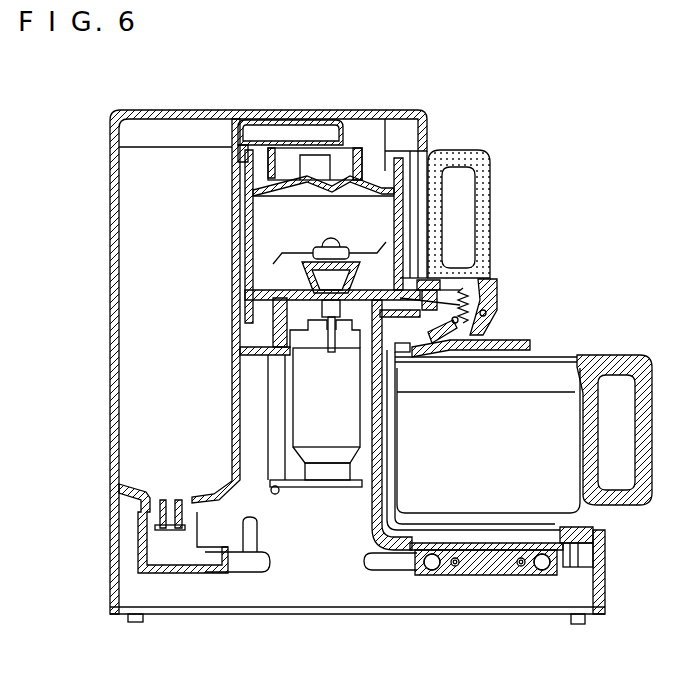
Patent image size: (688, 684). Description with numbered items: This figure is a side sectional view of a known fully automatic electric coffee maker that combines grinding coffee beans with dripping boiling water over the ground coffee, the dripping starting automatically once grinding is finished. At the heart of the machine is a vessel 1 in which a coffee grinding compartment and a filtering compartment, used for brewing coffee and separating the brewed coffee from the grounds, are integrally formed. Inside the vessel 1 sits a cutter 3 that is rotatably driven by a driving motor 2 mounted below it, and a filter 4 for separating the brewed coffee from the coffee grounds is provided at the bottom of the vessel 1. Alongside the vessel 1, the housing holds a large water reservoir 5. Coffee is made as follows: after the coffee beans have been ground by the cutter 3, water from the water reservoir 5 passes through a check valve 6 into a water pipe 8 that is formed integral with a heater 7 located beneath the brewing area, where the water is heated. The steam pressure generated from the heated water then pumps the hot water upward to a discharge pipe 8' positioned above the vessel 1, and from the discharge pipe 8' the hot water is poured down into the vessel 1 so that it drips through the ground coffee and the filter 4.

The vessel 1 is at (325, 208).
The driving motor 2 is at (292, 404).
The cutter 3 is at (362, 248).
The filter 4 is at (378, 285).
The water reservoir 5 is at (148, 308).
The check valve 6 is at (178, 502).
The heater 7 is at (517, 568).
The water pipe 8 is at (487, 609).
The discharge pipe 8' is at (301, 111).